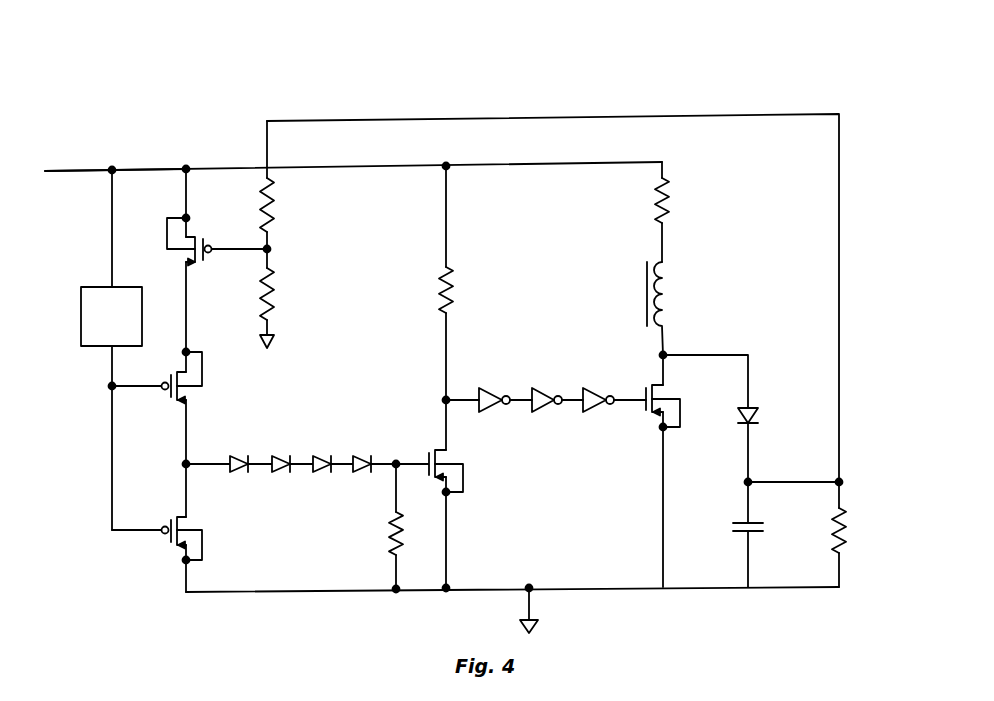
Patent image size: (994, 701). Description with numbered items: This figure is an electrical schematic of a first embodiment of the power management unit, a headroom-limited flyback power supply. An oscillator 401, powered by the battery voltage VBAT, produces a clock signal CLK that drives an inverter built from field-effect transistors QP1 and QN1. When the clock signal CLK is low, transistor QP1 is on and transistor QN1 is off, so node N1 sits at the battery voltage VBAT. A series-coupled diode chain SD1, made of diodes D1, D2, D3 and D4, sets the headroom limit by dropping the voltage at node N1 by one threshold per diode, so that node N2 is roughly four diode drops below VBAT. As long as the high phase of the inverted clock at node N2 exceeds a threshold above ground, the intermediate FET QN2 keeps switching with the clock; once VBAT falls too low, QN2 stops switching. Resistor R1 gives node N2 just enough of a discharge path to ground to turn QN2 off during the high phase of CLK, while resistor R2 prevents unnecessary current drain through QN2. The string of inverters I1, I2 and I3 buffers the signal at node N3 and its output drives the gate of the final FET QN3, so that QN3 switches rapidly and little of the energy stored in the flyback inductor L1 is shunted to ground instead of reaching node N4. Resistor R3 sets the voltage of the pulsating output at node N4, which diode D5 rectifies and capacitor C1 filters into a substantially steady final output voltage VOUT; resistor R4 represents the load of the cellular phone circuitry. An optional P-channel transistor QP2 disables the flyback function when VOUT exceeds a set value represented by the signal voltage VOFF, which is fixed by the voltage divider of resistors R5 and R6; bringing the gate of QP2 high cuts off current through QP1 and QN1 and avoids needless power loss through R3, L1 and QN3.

The battery voltage VBAT is at (115, 155).
The P-channel transistor QP2 is at (217, 236).
The resistor R5 is at (288, 223).
The signal voltage VOFF is at (303, 245).
The resistor R6 is at (288, 308).
The oscillator 401 is at (111, 316).
The clock signal CLK is at (108, 438).
The field-effect transistor QP1 is at (201, 382).
The field-effect transistor QN1 is at (177, 534).
The node N1 is at (186, 463).
The series-coupled diode chain SD1 is at (291, 447).
The diode D1 is at (240, 478).
The diode D2 is at (282, 478).
The diode D3 is at (323, 478).
The diode D4 is at (363, 478).
The node N2 is at (396, 458).
The resistor R1 is at (376, 526).
The intermediate FET QN2 is at (448, 465).
The resistor R2 is at (430, 290).
The node N3 is at (445, 398).
The inverter I1 is at (489, 386).
The inverter I2 is at (557, 386).
The inverter I3 is at (614, 386).
The final FET QN3 is at (681, 399).
The resistor R3 is at (641, 220).
The flyback inductor L1 is at (672, 308).
The node N4 is at (665, 353).
The diode D5 is at (767, 443).
The final output voltage VOUT is at (794, 469).
The capacitor C1 is at (764, 534).
The resistor R4 is at (858, 534).